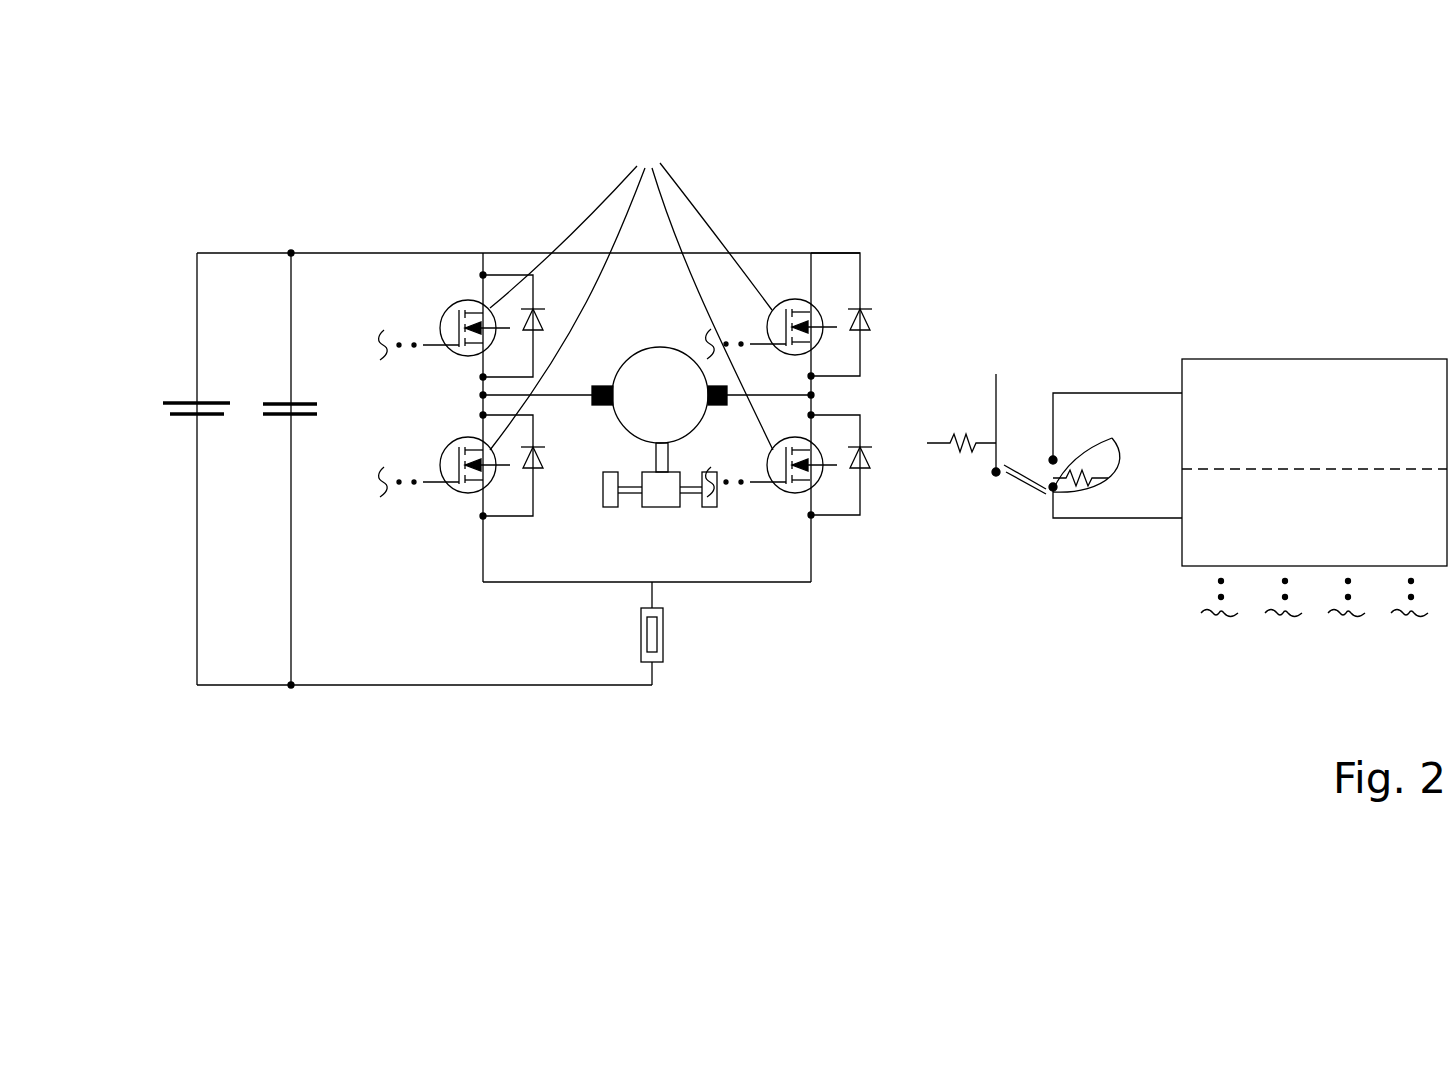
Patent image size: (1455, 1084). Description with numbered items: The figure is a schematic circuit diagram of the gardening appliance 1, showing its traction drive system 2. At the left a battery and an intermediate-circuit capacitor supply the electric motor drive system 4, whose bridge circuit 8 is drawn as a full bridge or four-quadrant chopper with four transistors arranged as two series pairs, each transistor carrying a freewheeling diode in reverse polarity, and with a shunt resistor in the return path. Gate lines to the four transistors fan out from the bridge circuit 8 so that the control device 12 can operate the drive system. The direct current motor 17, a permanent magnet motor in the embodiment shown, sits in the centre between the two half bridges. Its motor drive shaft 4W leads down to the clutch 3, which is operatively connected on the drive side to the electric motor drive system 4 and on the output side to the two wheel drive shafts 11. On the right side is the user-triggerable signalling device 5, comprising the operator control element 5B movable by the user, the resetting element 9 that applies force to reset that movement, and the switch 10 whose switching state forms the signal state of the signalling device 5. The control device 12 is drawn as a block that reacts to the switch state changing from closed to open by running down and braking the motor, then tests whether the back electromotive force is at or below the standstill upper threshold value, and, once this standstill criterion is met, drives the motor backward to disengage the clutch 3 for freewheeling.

The gardening appliance 1 is at (192, 208).
The traction drive system 2 is at (264, 181).
The electric motor drive system 4 is at (374, 208).
The bridge circuit 8 is at (631, 289).
The direct current motor 17 is at (657, 346).
The motor drive shaft 4W is at (656, 456).
The clutch 3 is at (676, 478).
The wheel drive shaft 11 is at (627, 492).
The signalling device 5 is at (1036, 350).
The operator control element 5B is at (996, 390).
The resetting element 9 is at (958, 452).
The switch 10 is at (1053, 460).
The control device 12 is at (1405, 358).